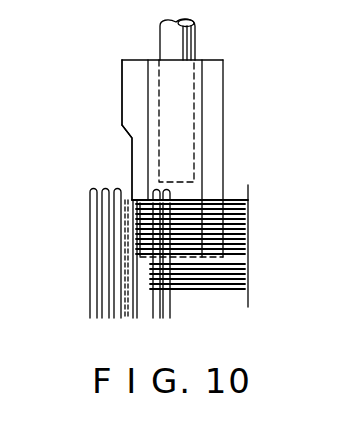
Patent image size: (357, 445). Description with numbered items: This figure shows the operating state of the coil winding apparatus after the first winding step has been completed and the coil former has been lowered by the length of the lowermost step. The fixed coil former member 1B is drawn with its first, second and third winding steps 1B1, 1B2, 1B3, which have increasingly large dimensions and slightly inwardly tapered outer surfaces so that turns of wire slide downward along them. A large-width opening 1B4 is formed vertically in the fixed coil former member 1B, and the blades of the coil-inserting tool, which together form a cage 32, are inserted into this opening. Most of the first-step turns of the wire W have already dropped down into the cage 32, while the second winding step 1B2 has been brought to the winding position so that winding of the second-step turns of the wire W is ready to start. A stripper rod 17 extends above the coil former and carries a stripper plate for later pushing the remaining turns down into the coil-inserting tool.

The fixed coil former member 1B is at (120, 56).
The first winding step 1B1 is at (130, 196).
The second winding step 1B2 is at (131, 136).
The third winding step 1B3 is at (122, 82).
The large-width opening 1B4 is at (195, 190).
The stripper rod 17 is at (196, 34).
The cage 32 is at (88, 200).
The wire W is at (238, 224).